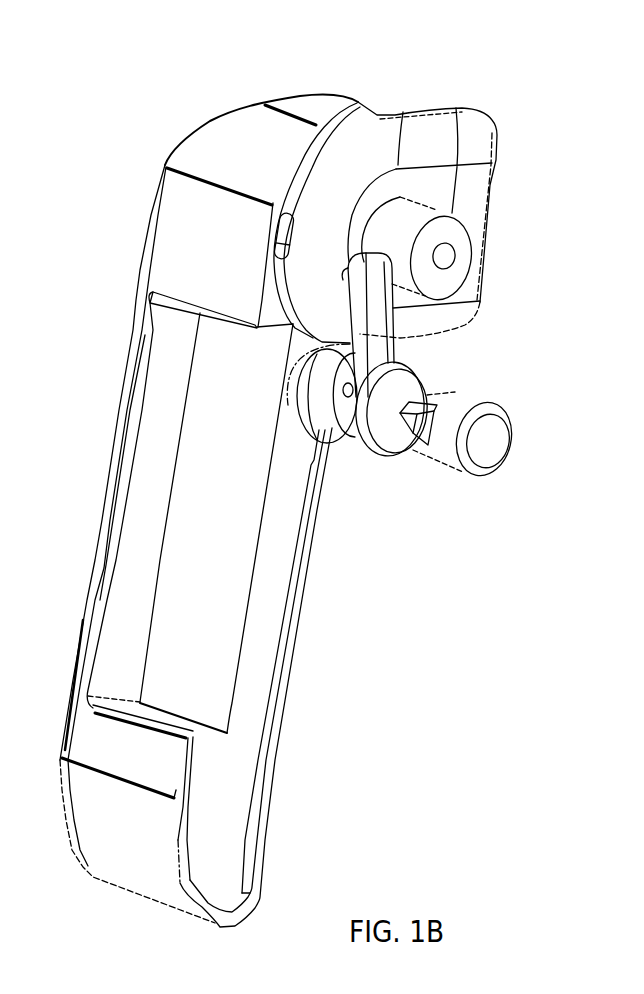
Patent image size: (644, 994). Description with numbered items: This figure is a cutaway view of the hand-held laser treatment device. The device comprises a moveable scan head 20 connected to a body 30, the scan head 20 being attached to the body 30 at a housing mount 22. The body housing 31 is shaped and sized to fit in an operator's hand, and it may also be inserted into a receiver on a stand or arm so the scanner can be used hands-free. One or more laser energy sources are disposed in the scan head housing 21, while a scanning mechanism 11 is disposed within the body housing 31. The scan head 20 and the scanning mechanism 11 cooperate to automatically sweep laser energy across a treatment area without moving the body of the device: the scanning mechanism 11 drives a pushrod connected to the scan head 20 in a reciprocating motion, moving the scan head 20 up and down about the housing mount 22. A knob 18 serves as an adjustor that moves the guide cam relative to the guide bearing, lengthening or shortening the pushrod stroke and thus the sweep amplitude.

The scanning mechanism 11 is at (350, 482).
The knob 18 is at (490, 448).
The scan head 20 is at (475, 211).
The scan head housing 21 is at (440, 110).
The housing mount 22 is at (463, 244).
The body 30 is at (312, 678).
The body housing 31 is at (177, 236).